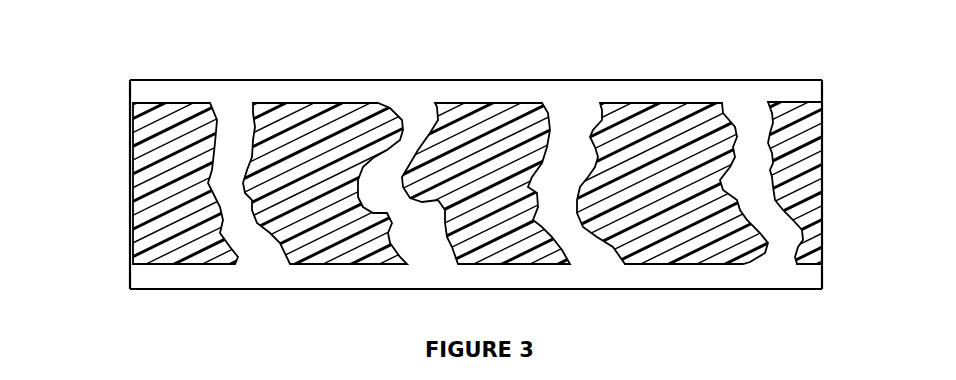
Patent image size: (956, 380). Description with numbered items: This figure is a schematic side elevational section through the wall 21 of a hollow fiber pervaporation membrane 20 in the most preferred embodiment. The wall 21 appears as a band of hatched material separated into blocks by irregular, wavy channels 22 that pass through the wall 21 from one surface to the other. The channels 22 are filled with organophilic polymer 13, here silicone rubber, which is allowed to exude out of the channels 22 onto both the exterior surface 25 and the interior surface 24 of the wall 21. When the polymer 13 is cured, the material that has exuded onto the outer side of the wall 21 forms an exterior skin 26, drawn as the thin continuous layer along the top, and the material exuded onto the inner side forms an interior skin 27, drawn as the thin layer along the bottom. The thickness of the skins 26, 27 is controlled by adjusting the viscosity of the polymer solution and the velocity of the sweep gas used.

The hollow fiber pervaporation membrane 20 is at (122, 168).
The exterior skin 26 is at (247, 80).
The interior skin 27 is at (327, 290).
The interior surface 24 is at (161, 265).
The organophilic polymer 13 is at (580, 267).
The channels 22 is at (781, 265).
The wall 21 is at (807, 182).
The exterior surface 25 is at (820, 99).